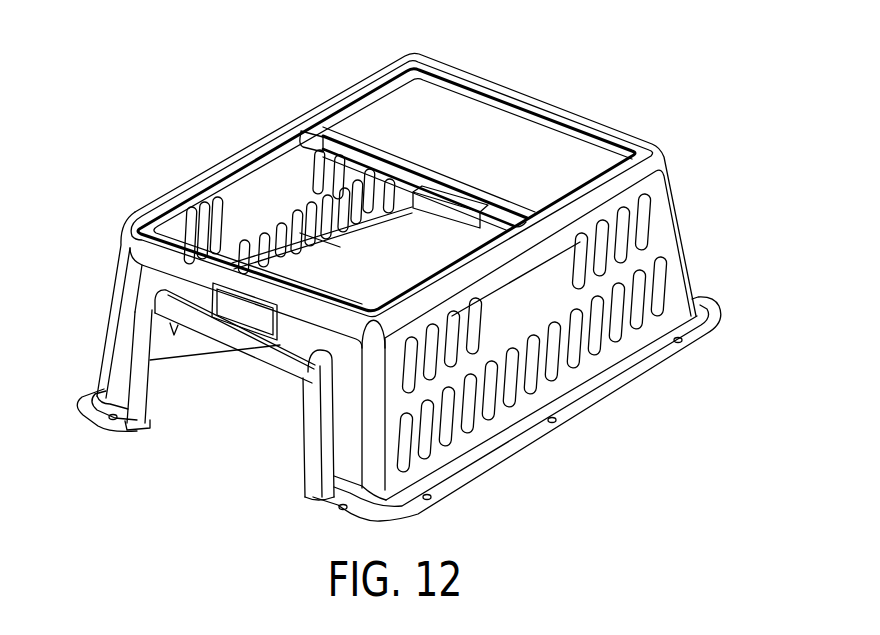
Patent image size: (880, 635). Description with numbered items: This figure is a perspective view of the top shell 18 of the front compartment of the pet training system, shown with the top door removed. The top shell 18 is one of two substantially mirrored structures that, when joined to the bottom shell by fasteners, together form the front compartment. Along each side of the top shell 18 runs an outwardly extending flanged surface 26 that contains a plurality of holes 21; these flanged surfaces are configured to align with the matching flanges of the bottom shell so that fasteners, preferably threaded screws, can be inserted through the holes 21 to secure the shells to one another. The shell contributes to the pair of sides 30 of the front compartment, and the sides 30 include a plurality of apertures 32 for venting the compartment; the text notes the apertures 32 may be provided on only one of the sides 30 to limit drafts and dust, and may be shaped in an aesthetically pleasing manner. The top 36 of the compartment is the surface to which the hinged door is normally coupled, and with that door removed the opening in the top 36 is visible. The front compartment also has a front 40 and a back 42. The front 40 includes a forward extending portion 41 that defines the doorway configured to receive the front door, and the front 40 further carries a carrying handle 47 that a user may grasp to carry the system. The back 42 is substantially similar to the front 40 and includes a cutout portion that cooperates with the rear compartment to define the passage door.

The top shell 18 is at (671, 178).
The holes 21 is at (430, 498).
The flanged surface 26 is at (465, 472).
The sides 30 is at (663, 230).
The apertures 32 is at (657, 277).
The top 36 is at (480, 118).
The front 40 is at (207, 440).
The forward extending portion 41 is at (146, 352).
The back 42 is at (671, 95).
The carrying handle 47 is at (141, 274).